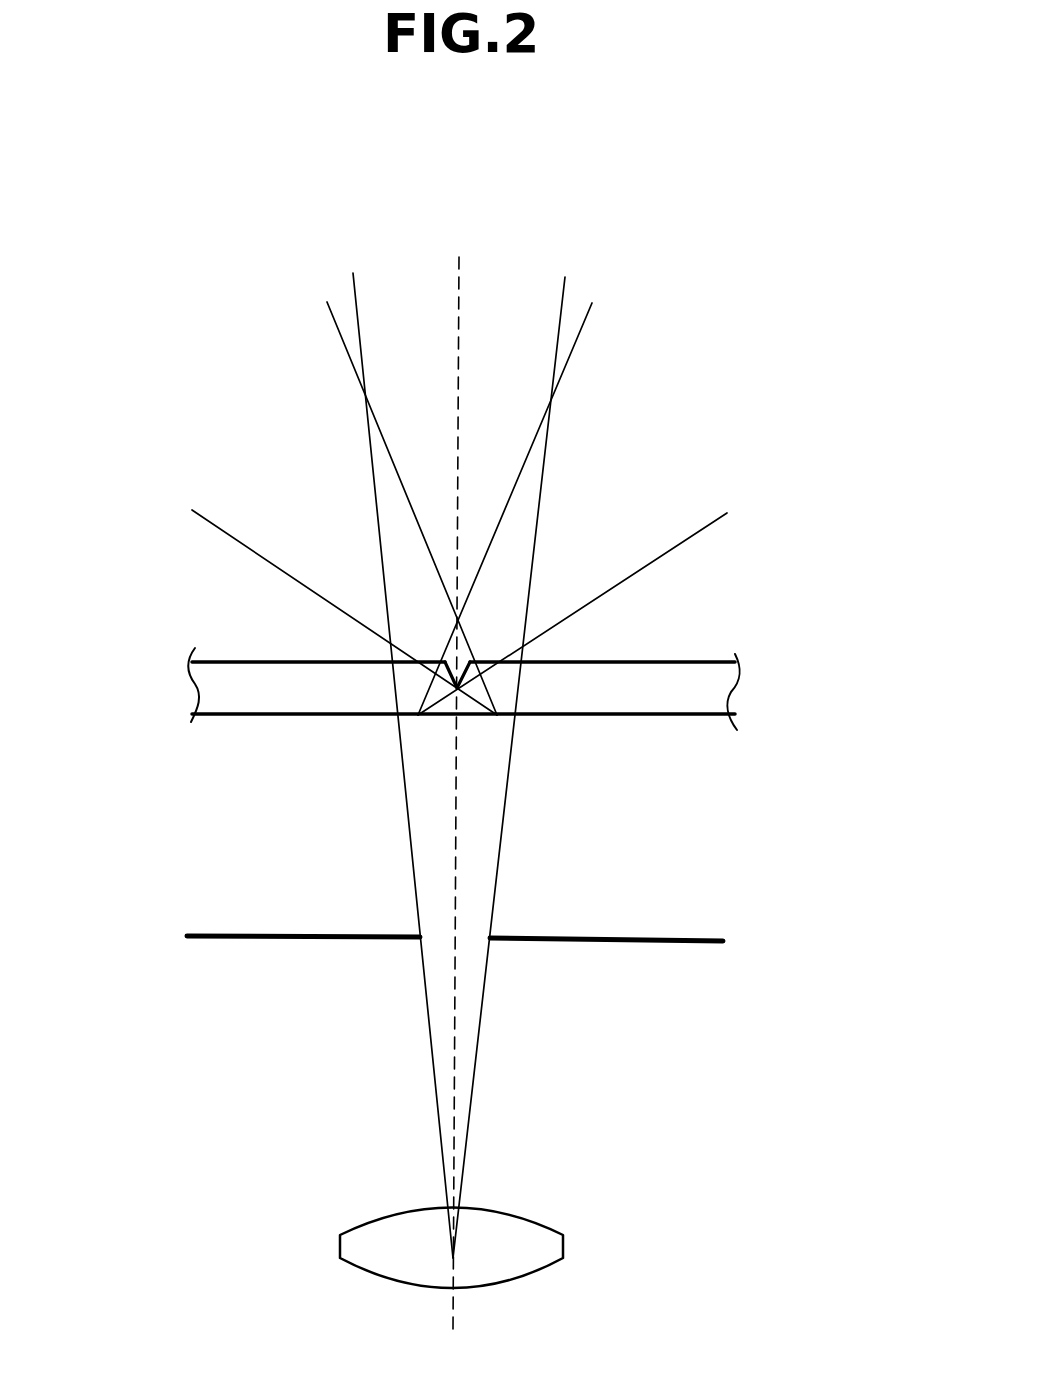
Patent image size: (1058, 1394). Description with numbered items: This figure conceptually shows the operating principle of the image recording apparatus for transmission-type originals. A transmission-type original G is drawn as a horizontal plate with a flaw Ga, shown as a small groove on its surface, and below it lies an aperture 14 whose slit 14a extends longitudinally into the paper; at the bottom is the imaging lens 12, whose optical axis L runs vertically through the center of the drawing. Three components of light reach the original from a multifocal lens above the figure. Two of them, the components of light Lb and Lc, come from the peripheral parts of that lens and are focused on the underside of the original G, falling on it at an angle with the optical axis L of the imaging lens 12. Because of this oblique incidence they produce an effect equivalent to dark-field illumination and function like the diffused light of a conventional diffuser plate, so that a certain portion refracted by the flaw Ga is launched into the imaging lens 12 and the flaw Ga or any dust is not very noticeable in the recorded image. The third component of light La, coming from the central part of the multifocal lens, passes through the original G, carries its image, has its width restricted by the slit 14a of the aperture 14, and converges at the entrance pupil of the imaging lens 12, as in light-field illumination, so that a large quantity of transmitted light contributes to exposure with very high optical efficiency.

The imaging lens 12 is at (563, 1252).
The aperture 14 is at (615, 945).
The slit 14a is at (408, 961).
The transmission-type original G is at (260, 680).
The flaw Ga is at (450, 654).
The optical axis L is at (457, 856).
The component of light La is at (537, 517).
The component of light Lb is at (652, 567).
The component of light Lc is at (230, 535).